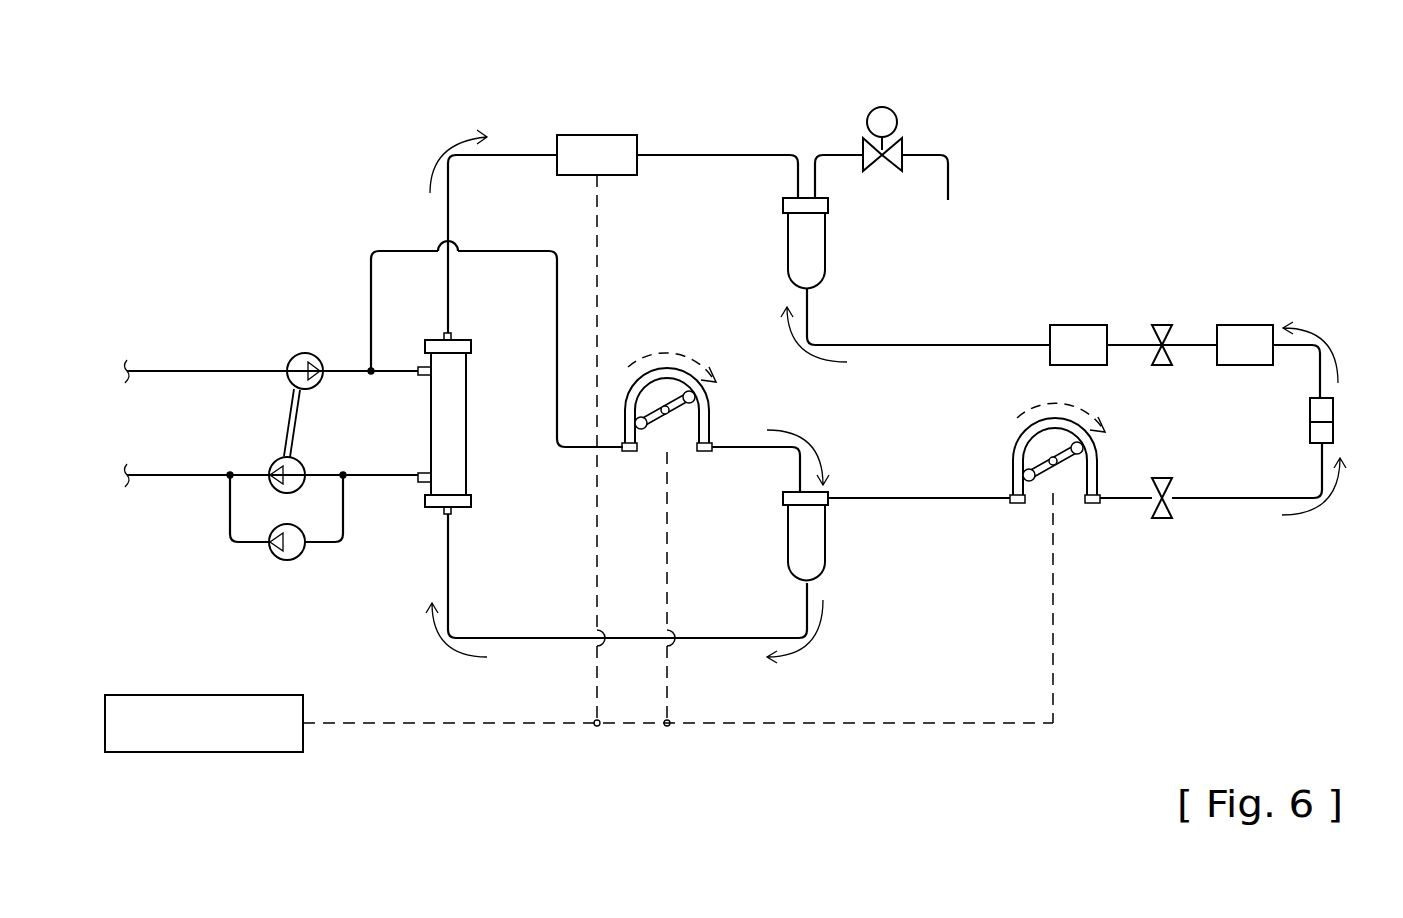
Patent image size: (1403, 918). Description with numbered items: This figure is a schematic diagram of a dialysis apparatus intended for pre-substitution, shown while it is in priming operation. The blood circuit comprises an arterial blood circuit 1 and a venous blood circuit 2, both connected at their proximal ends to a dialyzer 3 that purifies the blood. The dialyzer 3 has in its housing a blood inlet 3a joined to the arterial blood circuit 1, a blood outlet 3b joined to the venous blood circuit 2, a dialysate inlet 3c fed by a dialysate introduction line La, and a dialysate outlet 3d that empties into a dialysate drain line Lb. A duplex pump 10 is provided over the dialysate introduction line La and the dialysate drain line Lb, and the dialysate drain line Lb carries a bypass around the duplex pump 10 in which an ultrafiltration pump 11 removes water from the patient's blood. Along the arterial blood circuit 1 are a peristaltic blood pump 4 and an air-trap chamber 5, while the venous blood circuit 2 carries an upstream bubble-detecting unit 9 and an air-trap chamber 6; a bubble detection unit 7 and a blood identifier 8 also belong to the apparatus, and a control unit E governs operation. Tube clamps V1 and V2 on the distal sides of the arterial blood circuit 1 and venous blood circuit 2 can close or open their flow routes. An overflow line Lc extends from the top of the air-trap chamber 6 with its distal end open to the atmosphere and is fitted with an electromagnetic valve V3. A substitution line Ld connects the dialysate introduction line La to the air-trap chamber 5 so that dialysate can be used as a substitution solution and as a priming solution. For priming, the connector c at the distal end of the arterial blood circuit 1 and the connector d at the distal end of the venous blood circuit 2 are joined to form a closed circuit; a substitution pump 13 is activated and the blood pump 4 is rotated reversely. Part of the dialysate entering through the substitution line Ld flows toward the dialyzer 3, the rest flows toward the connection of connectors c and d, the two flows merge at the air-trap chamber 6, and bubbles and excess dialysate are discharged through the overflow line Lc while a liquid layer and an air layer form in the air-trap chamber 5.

The arterial blood circuit 1 is at (445, 586).
The venous blood circuit 2 is at (940, 345).
The dialyzer 3 is at (470, 423).
The blood inlet 3a is at (452, 514).
The blood outlet 3b is at (452, 334).
The dialysate inlet 3c is at (418, 367).
The dialysate outlet 3d is at (418, 482).
The blood pump 4 is at (1037, 508).
The air-trap chamber 5 is at (788, 540).
The air-trap chamber 6 is at (788, 247).
The bubble detection unit 7 is at (1090, 325).
The blood identifier 8 is at (1258, 325).
The upstream bubble-detecting unit 9 is at (583, 135).
The duplex pump 10 is at (275, 418).
The ultrafiltration pump 11 is at (288, 560).
The substitution pump 13 is at (652, 455).
The dialysate introduction line La is at (158, 371).
The dialysate drain line Lb is at (153, 477).
The overflow line Lc is at (923, 155).
The substitution line Ld is at (521, 251).
The tube clamp V1 is at (1162, 478).
The tube clamp V2 is at (1162, 325).
The electromagnetic valve V3 is at (878, 107).
The connector c is at (1333, 438).
The connector d is at (1333, 407).
The control unit E is at (205, 695).